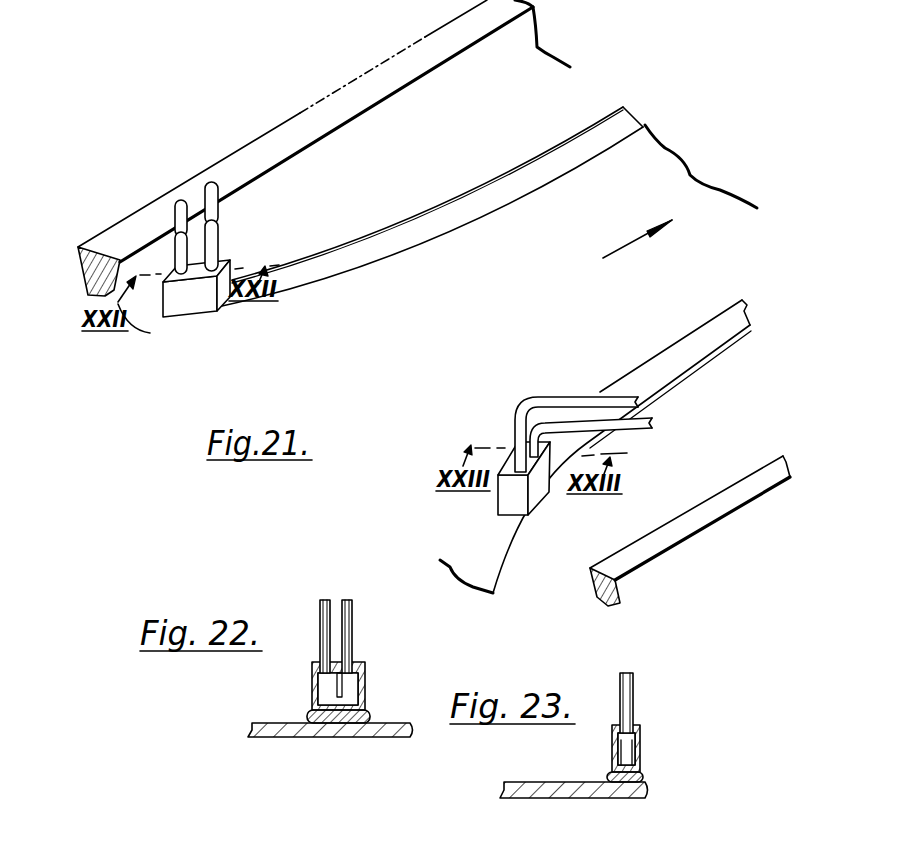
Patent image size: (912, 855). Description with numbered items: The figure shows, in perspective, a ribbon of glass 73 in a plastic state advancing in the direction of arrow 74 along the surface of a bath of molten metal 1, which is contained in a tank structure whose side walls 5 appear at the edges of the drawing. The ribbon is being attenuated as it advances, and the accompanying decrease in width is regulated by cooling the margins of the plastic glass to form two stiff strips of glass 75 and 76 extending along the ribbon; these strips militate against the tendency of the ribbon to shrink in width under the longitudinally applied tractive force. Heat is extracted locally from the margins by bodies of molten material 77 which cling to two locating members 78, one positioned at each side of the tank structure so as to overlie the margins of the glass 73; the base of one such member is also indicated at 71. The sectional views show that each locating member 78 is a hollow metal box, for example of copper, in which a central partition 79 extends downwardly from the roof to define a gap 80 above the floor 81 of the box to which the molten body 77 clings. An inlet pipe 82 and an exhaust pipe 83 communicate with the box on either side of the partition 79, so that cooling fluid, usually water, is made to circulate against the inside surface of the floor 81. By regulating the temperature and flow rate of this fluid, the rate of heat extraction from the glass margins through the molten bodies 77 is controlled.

In FIG. 21, the bath of molten metal 1 is at (693, 487).
In FIG. 21, the side walls 5 is at (305, 108).
In FIG. 21, the connector block 71 is at (198, 312).
In FIG. 21, the ribbon of glass 73 is at (403, 372).
In FIG. 22, the ribbon of glass 73 is at (265, 730).
In FIG. 23, the ribbon of glass 73 is at (642, 790).
In FIG. 21, the arrow 74 is at (647, 237).
In FIG. 21, the stiff strip of glass 75 is at (353, 258).
In FIG. 21, the stiff strip of glass 76 is at (624, 384).
In FIG. 21, the body of molten material 77 is at (540, 500).
In FIG. 22, the body of molten material 77 is at (362, 717).
In FIG. 23, the body of molten material 77 is at (642, 778).
In FIG. 21, the locating member 78 is at (229, 268).
In FIG. 22, the locating member 78 is at (313, 680).
In FIG. 23, the locating member 78 is at (637, 728).
In FIG. 22, the central partition 79 is at (345, 690).
In FIG. 23, the central partition 79 is at (632, 748).
In FIG. 22, the gap 80 is at (330, 698).
In FIG. 23, the gap 80 is at (620, 760).
In FIG. 22, the floor 81 is at (332, 737).
In FIG. 23, the floor 81 is at (612, 785).
In FIG. 21, the inlet pipe 82 is at (210, 182).
In FIG. 22, the inlet pipe 82 is at (352, 632).
In FIG. 23, the inlet pipe 82 is at (633, 690).
In FIG. 21, the exhaust pipe 83 is at (175, 202).
In FIG. 22, the exhaust pipe 83 is at (320, 632).